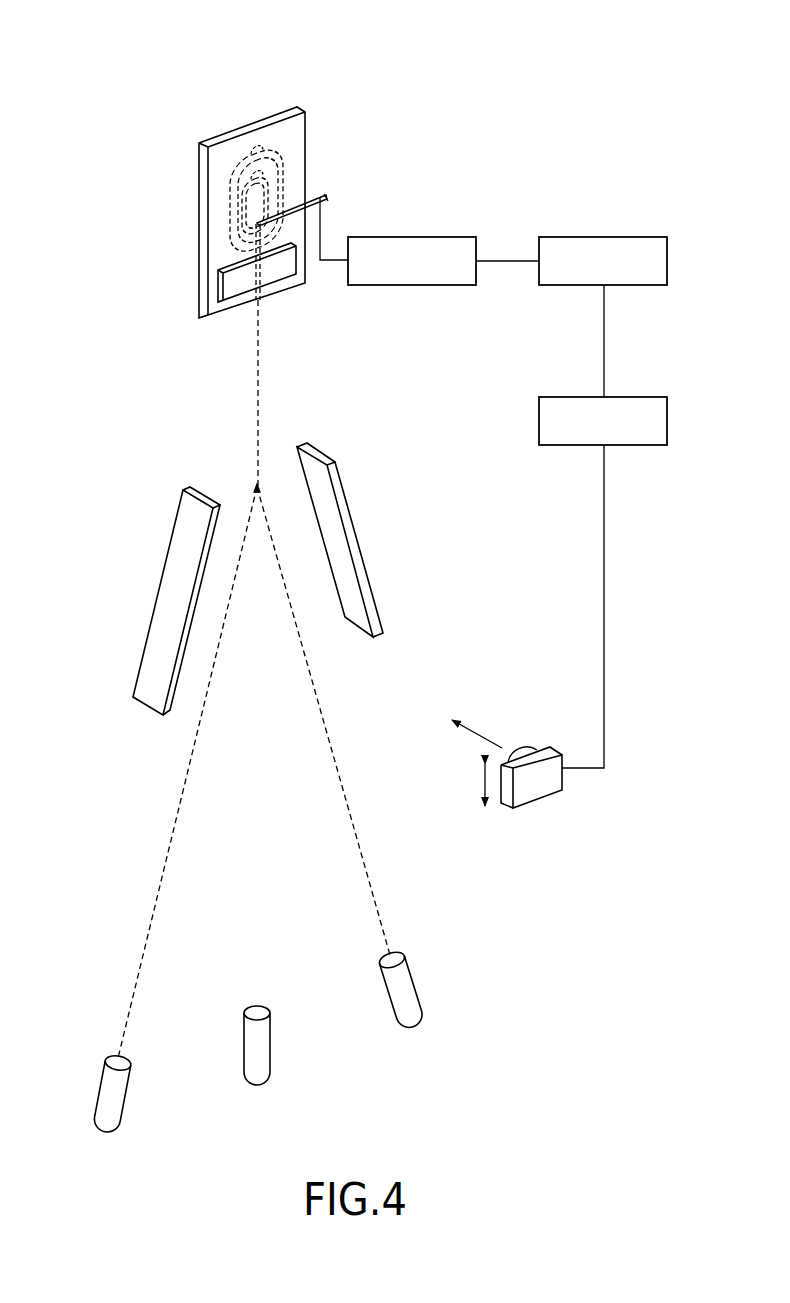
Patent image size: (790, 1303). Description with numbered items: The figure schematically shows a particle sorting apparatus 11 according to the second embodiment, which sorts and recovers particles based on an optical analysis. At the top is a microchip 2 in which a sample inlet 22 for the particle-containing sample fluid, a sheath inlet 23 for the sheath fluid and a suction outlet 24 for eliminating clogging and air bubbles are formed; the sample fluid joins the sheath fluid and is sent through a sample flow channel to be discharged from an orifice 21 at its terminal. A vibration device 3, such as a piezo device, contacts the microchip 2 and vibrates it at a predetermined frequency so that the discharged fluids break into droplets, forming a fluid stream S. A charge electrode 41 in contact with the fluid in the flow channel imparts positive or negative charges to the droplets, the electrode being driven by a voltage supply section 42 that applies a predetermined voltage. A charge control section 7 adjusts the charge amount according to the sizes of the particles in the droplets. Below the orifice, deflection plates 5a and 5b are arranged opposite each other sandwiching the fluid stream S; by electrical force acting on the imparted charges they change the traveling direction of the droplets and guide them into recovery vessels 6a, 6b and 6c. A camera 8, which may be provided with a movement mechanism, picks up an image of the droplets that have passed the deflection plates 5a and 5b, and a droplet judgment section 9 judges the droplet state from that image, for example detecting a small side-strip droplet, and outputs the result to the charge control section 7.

The microchip 2 is at (287, 108).
The vibration device 3 is at (218, 314).
The orifice 21 is at (262, 306).
The sample inlet 22 is at (232, 226).
The sheath inlet 23 is at (234, 189).
The suction outlet 24 is at (255, 148).
The charge electrode 41 is at (320, 190).
The voltage supply section 42 is at (428, 237).
The charge control section 7 is at (608, 237).
The droplet judgment section 9 is at (648, 397).
The image pickup device (camera) 8 is at (547, 797).
The particle sorting apparatus 11 is at (457, 94).
The fluid stream S is at (255, 422).
The deflection plate 5a is at (158, 590).
The deflection plate 5b is at (375, 588).
The recovery vessel 6a is at (95, 1098).
The recovery vessel 6b is at (252, 1087).
The recovery vessel 6c is at (407, 1033).